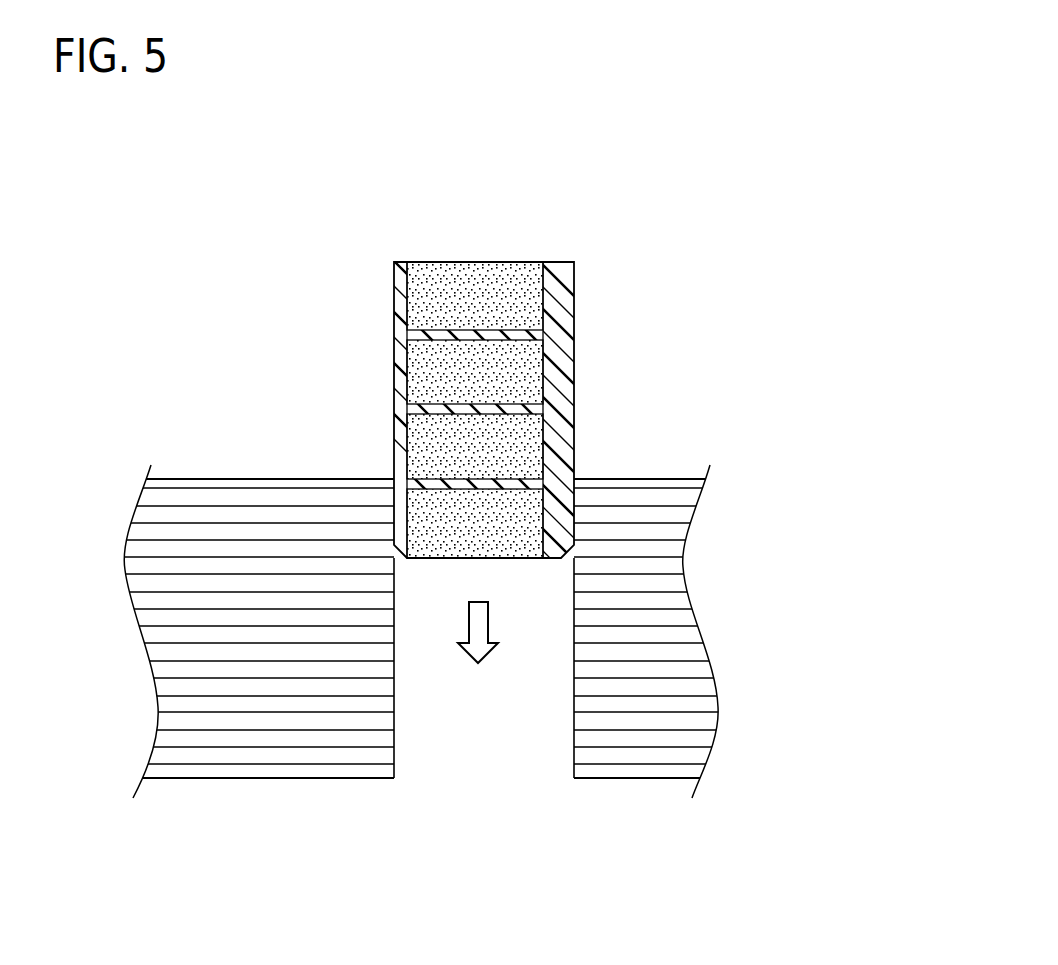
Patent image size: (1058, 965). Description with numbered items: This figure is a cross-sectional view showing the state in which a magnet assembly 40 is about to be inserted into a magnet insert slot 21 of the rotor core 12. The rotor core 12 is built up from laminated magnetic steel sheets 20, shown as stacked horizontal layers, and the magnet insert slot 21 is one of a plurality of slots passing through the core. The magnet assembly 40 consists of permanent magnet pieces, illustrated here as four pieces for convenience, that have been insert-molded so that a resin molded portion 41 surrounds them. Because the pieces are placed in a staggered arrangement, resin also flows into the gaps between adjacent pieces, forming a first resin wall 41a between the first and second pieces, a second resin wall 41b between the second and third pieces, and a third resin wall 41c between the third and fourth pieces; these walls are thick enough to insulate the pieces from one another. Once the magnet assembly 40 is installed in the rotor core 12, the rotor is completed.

The rotor core 12 is at (786, 790).
The magnetic steel sheets 20 is at (660, 496).
The magnet insert slot 21 is at (573, 758).
The magnet assembly 40 is at (607, 250).
The resin molded portion 41 is at (568, 332).
The first resin wall 41a is at (527, 328).
The second resin wall 41b is at (538, 401).
The third resin wall 41c is at (537, 470).